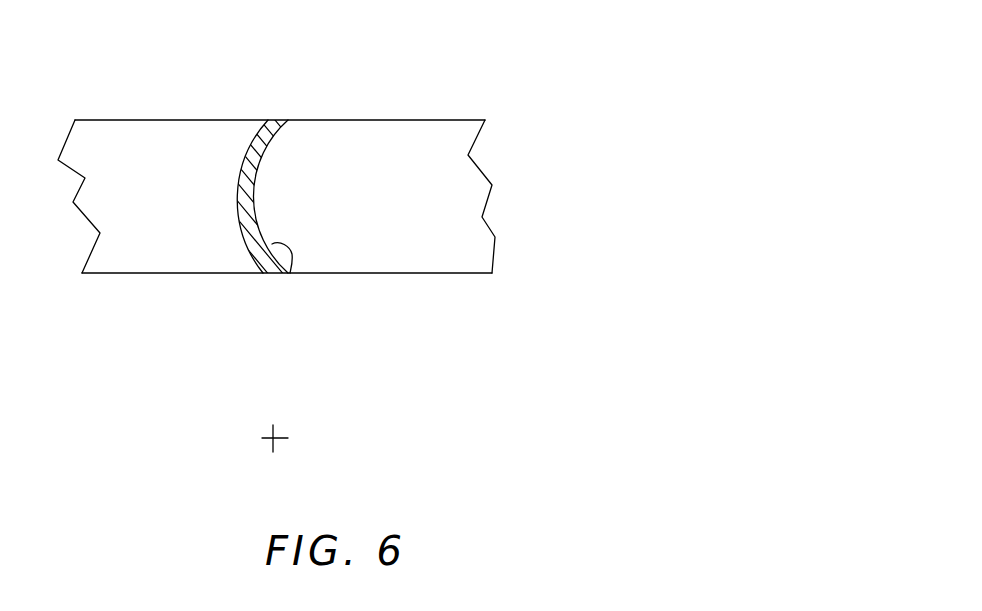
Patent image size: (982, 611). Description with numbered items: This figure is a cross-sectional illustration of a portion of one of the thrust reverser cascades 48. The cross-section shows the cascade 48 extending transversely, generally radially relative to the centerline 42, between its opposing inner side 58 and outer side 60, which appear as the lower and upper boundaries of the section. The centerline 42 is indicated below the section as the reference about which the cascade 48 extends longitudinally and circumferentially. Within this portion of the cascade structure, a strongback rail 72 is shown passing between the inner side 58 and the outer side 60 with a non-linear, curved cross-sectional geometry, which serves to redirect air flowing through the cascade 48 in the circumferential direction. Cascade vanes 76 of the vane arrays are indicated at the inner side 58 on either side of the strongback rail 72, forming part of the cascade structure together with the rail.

The centerline 42 is at (276, 440).
The thrust reverser cascade 48 is at (527, 82).
The inner side 58 is at (477, 273).
The outer side 60 is at (443, 120).
The strongback rail 72 is at (287, 273).
The cascade vane 76 is at (135, 273).